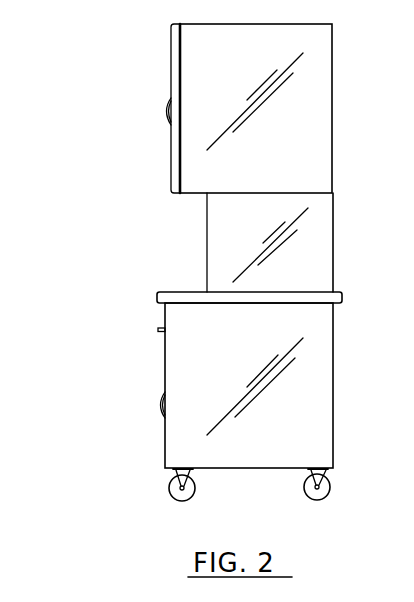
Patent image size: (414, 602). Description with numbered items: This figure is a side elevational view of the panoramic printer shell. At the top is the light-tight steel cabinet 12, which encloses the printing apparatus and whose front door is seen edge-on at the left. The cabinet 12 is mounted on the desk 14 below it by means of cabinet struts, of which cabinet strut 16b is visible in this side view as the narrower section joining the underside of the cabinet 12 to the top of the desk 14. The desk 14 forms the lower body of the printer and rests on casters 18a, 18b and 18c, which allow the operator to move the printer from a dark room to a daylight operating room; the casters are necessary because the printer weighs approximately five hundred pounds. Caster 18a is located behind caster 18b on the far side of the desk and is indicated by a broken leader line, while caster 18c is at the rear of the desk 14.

The cabinet 12 is at (312, 78).
The cabinet strut 16b is at (312, 243).
The desk 14 is at (312, 395).
The caster 18a is at (168, 488).
The caster 18b is at (192, 495).
The caster 18c is at (327, 497).